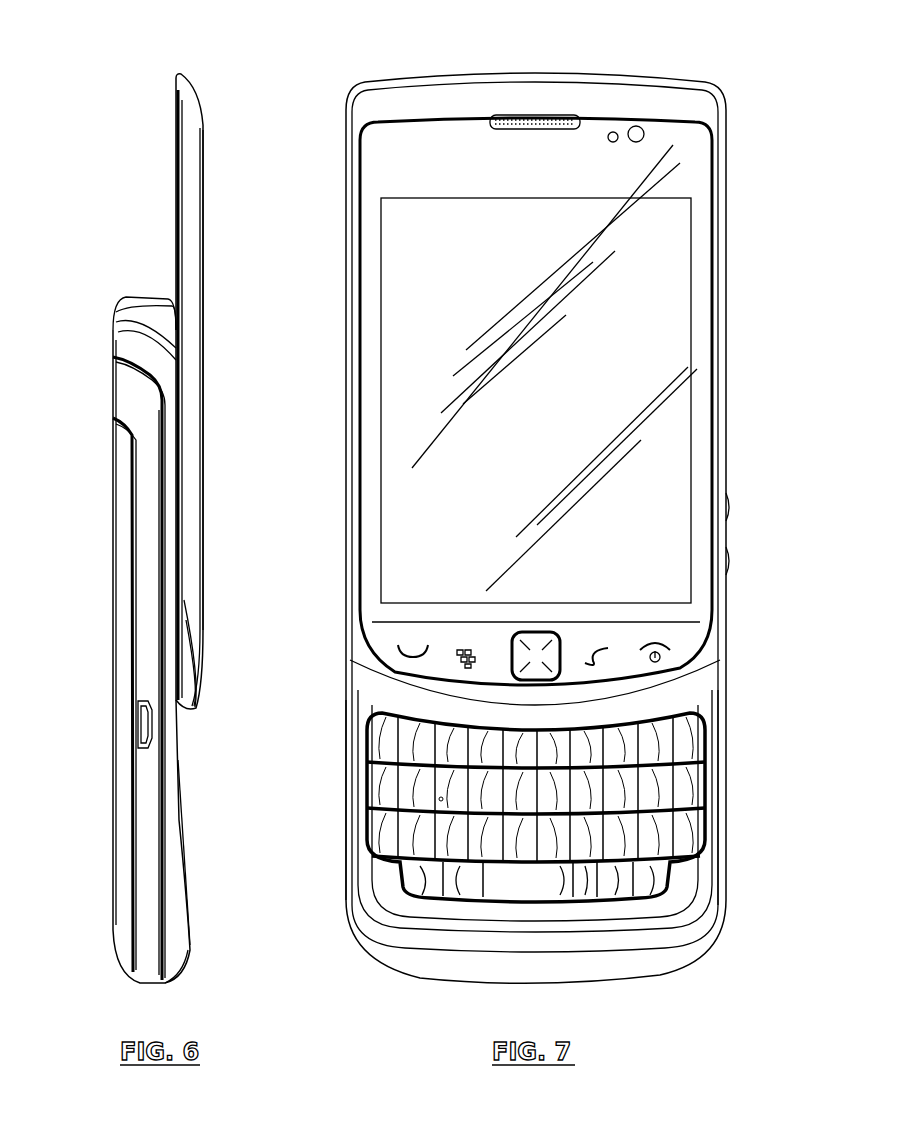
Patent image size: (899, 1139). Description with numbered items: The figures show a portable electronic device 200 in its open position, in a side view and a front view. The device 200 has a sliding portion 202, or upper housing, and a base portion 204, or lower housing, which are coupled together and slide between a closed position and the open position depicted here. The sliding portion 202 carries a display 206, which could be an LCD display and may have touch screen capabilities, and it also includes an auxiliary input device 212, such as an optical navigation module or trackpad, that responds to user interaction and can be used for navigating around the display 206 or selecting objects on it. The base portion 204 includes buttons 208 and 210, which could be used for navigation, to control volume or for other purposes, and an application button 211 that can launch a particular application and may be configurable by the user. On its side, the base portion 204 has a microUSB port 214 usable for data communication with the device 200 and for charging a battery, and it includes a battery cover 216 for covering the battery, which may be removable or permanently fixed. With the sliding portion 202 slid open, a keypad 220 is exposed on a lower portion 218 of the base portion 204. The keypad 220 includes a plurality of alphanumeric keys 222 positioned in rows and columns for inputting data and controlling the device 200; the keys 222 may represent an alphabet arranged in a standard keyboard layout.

In FIG. 6, the portable electronic device 200 is at (164, 58).
In FIG. 7, the portable electronic device 200 is at (490, 56).
In FIG. 6, the sliding portion 202 is at (185, 176).
In FIG. 7, the sliding portion 202 is at (386, 105).
In FIG. 6, the base portion 204 is at (120, 396).
In FIG. 7, the base portion 204 is at (343, 697).
In FIG. 6, the display 206 is at (206, 302).
In FIG. 7, the display 206 is at (660, 300).
In FIG. 7, the button 208 is at (728, 502).
In FIG. 7, the button 210 is at (728, 560).
In FIG. 7, the application button 211 is at (730, 734).
In FIG. 7, the auxiliary input device 212 is at (545, 652).
In FIG. 6, the microUSB port 214 is at (142, 730).
In FIG. 6, the battery cover 216 is at (118, 576).
In FIG. 6, the lower portion 218 is at (184, 958).
In FIG. 7, the lower portion 218 is at (331, 830).
In FIG. 6, the keypad 220 is at (190, 881).
In FIG. 7, the keypad 220 is at (662, 790).
In FIG. 7, the alphanumeric keys 222 is at (650, 930).